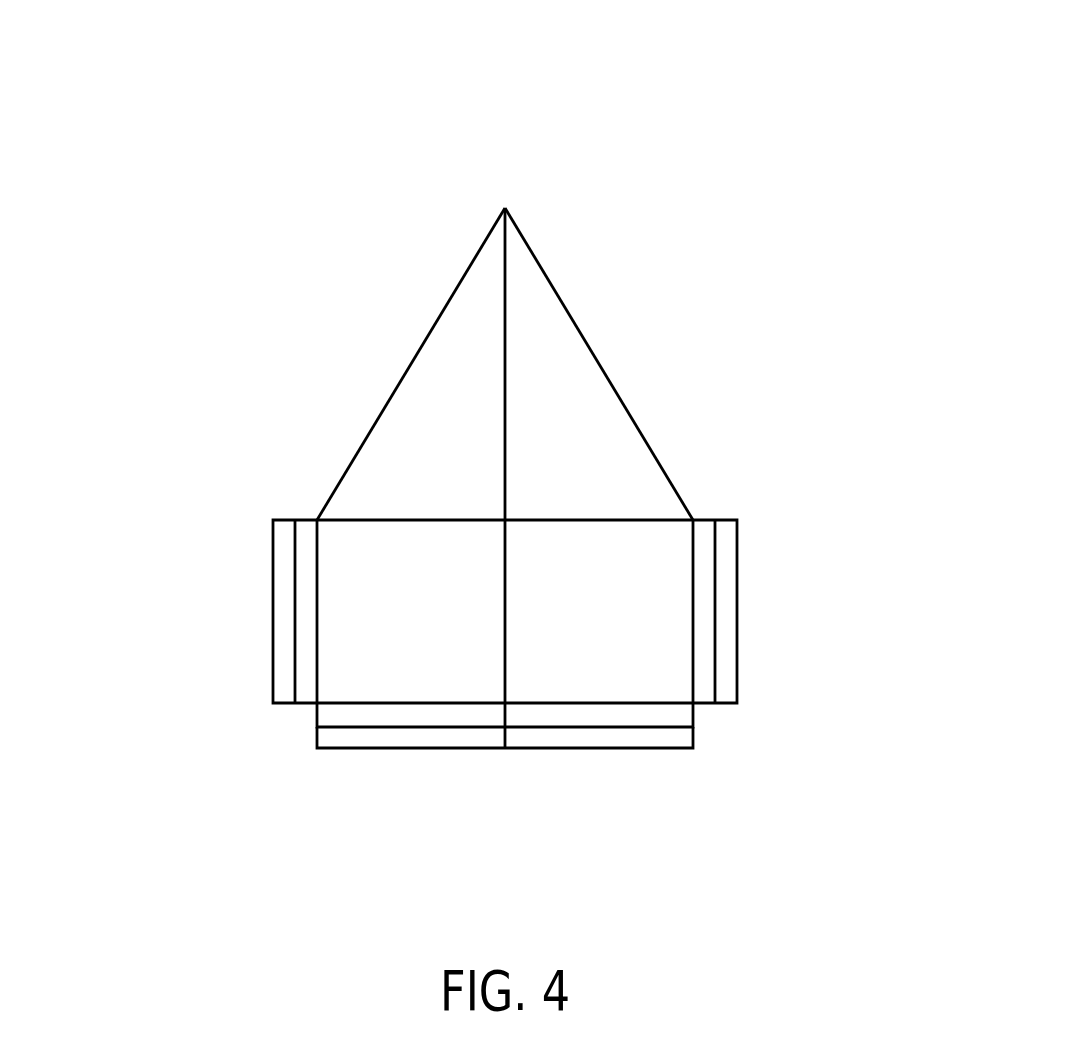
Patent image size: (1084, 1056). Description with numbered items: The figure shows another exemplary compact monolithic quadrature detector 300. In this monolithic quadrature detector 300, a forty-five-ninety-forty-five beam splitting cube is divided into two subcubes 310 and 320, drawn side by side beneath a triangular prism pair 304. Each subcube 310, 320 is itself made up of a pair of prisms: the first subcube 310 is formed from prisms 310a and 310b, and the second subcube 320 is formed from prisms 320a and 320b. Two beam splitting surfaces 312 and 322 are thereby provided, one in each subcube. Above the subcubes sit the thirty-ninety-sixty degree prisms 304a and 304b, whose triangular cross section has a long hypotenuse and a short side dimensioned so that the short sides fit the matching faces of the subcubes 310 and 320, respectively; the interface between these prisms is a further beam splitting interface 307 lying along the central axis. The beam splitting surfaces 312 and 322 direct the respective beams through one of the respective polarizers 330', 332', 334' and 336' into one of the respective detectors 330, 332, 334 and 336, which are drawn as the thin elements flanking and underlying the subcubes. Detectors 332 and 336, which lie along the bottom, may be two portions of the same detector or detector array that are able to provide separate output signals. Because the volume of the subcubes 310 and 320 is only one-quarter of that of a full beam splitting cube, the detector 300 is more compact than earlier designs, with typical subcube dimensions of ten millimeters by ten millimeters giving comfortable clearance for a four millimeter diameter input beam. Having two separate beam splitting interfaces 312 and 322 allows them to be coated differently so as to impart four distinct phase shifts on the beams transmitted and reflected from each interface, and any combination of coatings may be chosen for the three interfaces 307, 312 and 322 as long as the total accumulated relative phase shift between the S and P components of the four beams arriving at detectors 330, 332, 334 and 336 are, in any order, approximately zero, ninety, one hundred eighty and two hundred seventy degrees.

The monolithic quadrature detector 300 is at (722, 95).
The prism pair 304 is at (695, 207).
The 30-90-60 degree prism 304a is at (485, 278).
The 30-90-60 degree prism 304b is at (527, 282).
The beam splitting interface 307 is at (505, 368).
The subcube 310 is at (153, 385).
The prism 310a is at (438, 537).
The prism 310b is at (445, 620).
The beam splitting surface 312 is at (373, 648).
The subcube 320 is at (858, 385).
The prism 320a is at (578, 547).
The prism 320b is at (568, 633).
The beam splitting surface 322 is at (635, 648).
The detector 330 is at (228, 611).
The polarizer 330' is at (222, 611).
The detector 332 is at (376, 789).
The polarizer 332' is at (342, 733).
The detector 334 is at (781, 611).
The polarizer 334' is at (787, 611).
The detector 336 is at (639, 757).
The polarizer 336' is at (674, 724).